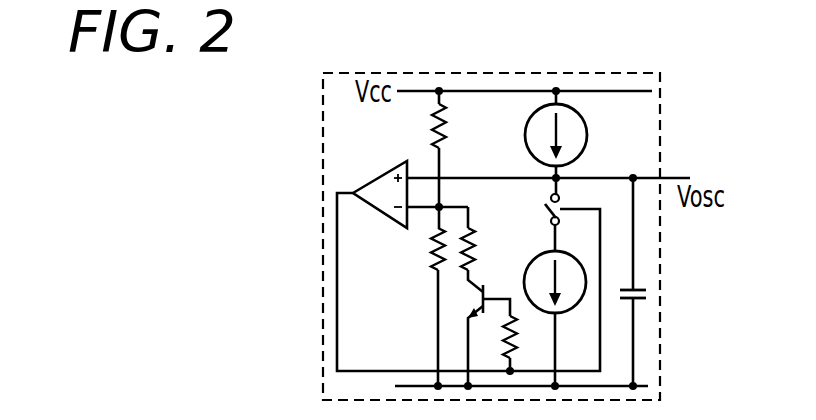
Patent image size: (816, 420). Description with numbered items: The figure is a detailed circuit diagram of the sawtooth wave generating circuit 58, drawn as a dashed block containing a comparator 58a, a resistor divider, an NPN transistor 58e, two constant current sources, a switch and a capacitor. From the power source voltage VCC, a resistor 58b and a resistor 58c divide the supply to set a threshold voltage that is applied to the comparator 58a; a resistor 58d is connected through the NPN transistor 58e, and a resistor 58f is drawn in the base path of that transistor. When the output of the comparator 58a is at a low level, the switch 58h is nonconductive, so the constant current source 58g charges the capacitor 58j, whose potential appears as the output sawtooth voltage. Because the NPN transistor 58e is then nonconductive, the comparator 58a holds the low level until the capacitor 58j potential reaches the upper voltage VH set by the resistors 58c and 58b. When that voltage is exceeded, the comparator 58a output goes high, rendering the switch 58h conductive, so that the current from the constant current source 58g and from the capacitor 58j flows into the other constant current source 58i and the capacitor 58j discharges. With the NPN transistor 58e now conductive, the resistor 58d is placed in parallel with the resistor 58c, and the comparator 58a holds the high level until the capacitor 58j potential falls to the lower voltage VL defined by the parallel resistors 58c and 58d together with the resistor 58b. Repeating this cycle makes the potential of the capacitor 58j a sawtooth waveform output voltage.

The sawtooth wave generating circuit 58 is at (596, 74).
The comparator 58a is at (386, 174).
The resistor 58b is at (461, 126).
The resistor 58c is at (416, 249).
The resistor 58d is at (488, 249).
The NPN transistor 58e is at (470, 304).
The resistor 58f is at (528, 343).
The constant current source 58g is at (586, 130).
The switch 58h is at (530, 206).
The constant current source 58i is at (565, 315).
The capacitor 58j is at (648, 294).